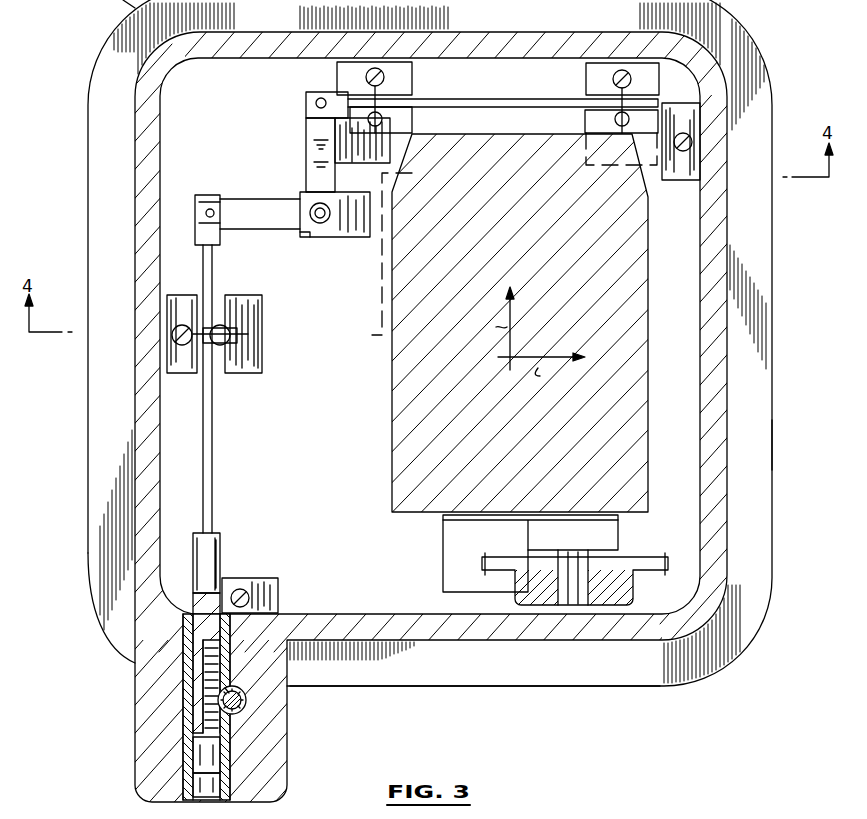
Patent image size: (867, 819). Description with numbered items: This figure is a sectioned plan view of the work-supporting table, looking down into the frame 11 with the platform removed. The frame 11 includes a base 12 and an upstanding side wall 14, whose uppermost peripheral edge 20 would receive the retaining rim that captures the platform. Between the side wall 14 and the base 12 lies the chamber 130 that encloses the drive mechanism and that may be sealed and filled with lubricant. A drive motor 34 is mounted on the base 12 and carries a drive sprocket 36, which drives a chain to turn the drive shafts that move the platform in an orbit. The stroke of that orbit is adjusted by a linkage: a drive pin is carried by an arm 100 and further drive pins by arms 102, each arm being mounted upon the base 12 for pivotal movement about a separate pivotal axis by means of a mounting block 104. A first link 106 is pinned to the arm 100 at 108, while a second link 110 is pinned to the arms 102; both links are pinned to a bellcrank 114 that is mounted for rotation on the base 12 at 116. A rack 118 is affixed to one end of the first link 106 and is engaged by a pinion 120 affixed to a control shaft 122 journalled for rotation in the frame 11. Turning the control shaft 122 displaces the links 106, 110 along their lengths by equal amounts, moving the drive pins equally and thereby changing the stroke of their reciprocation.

The frame 11 is at (100, 408).
The base 12 is at (615, 677).
The side wall 14 is at (137, 465).
The uppermost peripheral edge 20 is at (708, 458).
The drive motor 34 is at (402, 438).
The drive sprocket 36 is at (620, 560).
The arm 100 is at (217, 347).
The arms 102 is at (410, 118).
The mounting block 104 is at (380, 158).
The first link 106 is at (214, 452).
The pin connection 108 is at (218, 328).
The second link 110 is at (512, 98).
The bellcrank 114 is at (266, 206).
The bellcrank mounting 116 is at (322, 237).
The rack 118 is at (196, 668).
The pinion 120 is at (244, 713).
The control shaft 122 is at (247, 690).
The chamber 130 is at (330, 522).